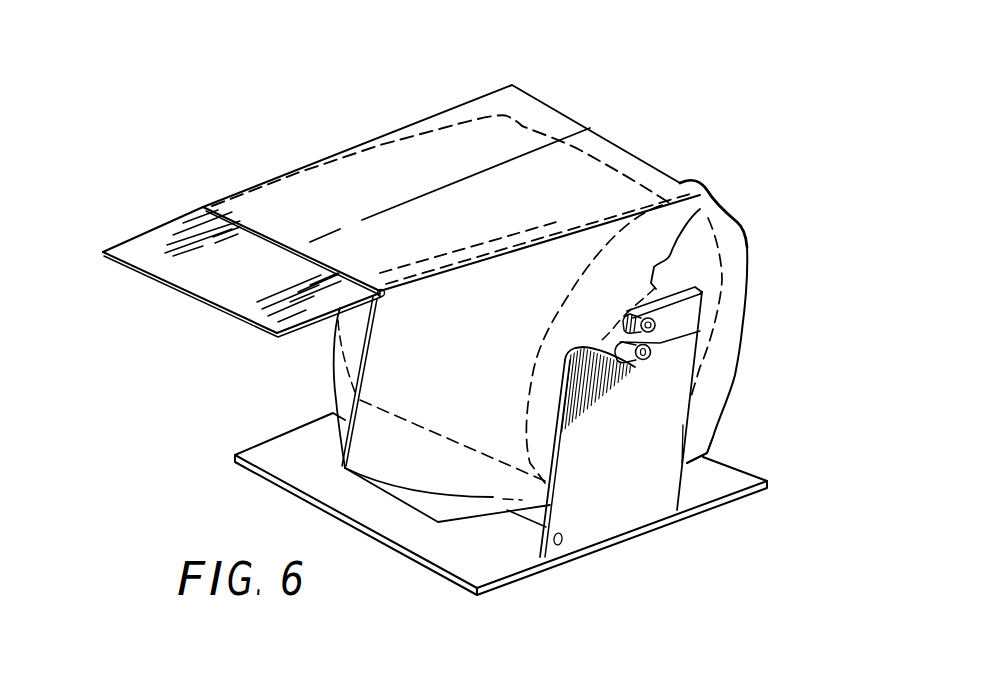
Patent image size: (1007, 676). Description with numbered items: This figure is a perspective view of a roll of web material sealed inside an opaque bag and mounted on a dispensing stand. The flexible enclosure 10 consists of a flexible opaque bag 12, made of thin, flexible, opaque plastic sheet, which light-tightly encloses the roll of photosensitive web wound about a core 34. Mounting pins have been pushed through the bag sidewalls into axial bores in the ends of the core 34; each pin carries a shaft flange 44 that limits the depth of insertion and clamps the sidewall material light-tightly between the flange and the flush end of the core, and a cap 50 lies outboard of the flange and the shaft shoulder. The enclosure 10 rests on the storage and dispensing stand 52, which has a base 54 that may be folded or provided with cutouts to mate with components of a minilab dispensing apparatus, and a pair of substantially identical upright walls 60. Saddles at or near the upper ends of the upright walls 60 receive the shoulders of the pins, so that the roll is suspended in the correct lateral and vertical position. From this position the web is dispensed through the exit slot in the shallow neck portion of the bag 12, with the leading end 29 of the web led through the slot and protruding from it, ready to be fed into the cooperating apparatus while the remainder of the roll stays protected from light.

The flexible enclosure 10 is at (514, 271).
The flexible opaque bag 12 is at (733, 242).
The leading end 29 is at (153, 243).
The core 34 is at (693, 220).
The shaft flange 44 is at (618, 343).
The cap 50 is at (700, 331).
The storage and dispensing stand 52 is at (524, 449).
The base 54 is at (713, 470).
The upright walls 60 is at (593, 513).